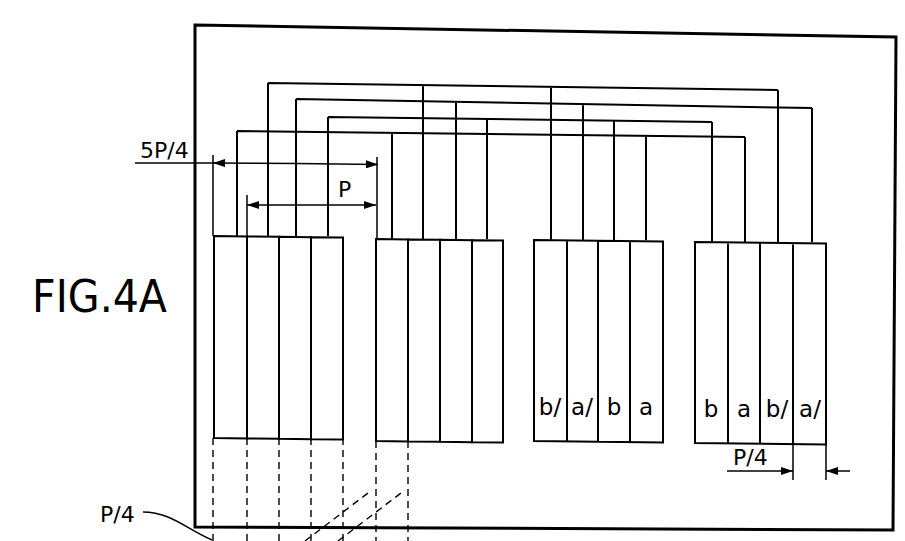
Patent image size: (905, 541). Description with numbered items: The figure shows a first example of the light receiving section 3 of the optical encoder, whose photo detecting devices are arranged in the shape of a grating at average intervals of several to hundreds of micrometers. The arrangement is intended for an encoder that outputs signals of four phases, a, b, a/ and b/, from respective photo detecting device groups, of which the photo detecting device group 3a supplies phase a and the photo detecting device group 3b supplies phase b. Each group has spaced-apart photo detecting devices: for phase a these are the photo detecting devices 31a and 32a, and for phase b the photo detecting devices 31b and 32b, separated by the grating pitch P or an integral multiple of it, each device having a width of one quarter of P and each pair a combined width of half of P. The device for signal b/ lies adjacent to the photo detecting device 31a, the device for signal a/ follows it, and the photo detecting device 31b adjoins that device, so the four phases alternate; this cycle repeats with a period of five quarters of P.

The light receiving section 3 is at (550, 32).
The photo detecting device group 3a is at (250, 130).
The photo detecting device group 3b is at (432, 118).
The photo detecting device 31a is at (232, 439).
The photo detecting device 31b is at (326, 439).
The photo detecting device 32a is at (391, 441).
The photo detecting device 32b is at (486, 441).